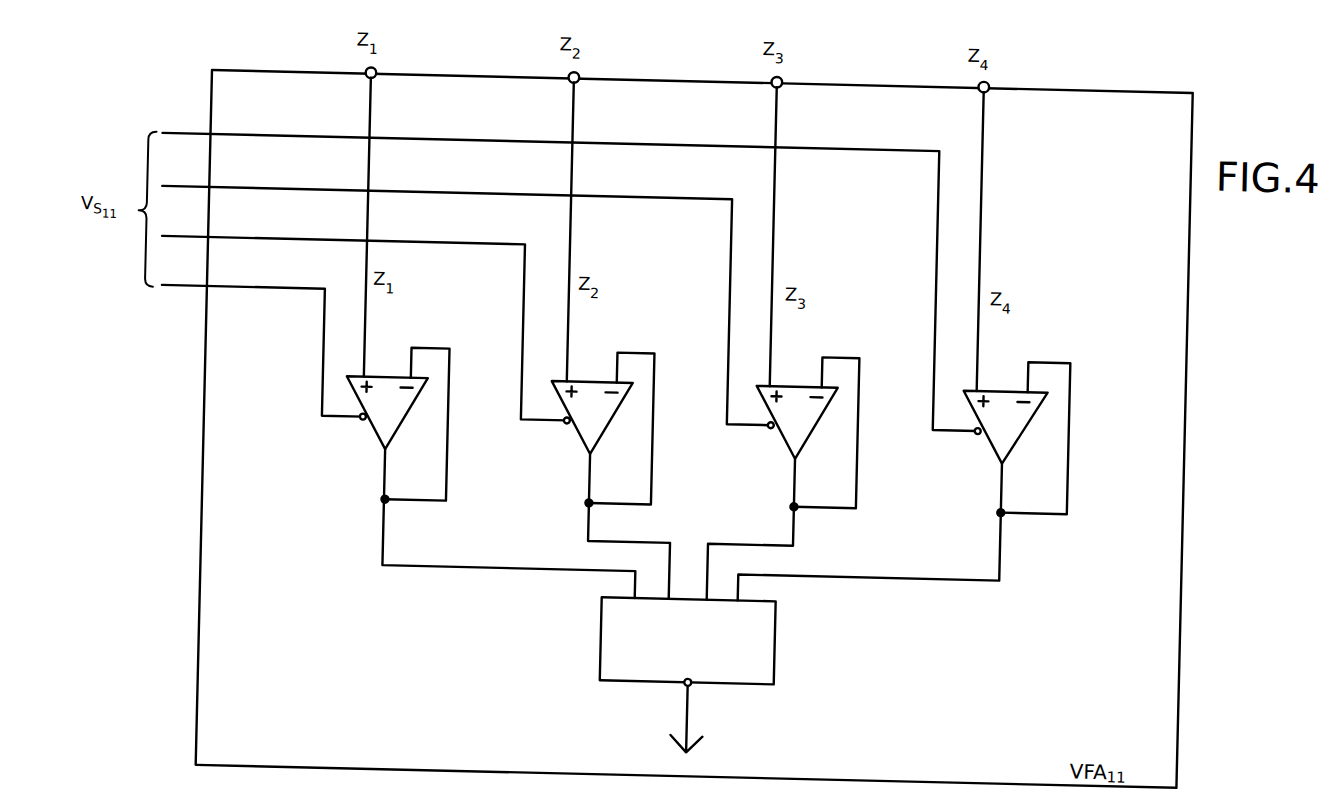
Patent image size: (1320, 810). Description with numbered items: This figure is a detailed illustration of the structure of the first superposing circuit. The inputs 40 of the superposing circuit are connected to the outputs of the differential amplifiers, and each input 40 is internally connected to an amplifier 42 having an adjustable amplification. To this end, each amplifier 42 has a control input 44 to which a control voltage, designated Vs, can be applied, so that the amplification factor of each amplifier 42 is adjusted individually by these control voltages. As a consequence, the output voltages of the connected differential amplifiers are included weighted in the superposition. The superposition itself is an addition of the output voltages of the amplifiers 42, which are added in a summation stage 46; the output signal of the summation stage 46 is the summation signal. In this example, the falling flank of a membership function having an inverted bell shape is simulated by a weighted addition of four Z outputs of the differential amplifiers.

The inputs 40 is at (377, 66).
The amplifier 42 is at (378, 429).
The control input 44 is at (368, 420).
The summation stage 46 is at (625, 632).